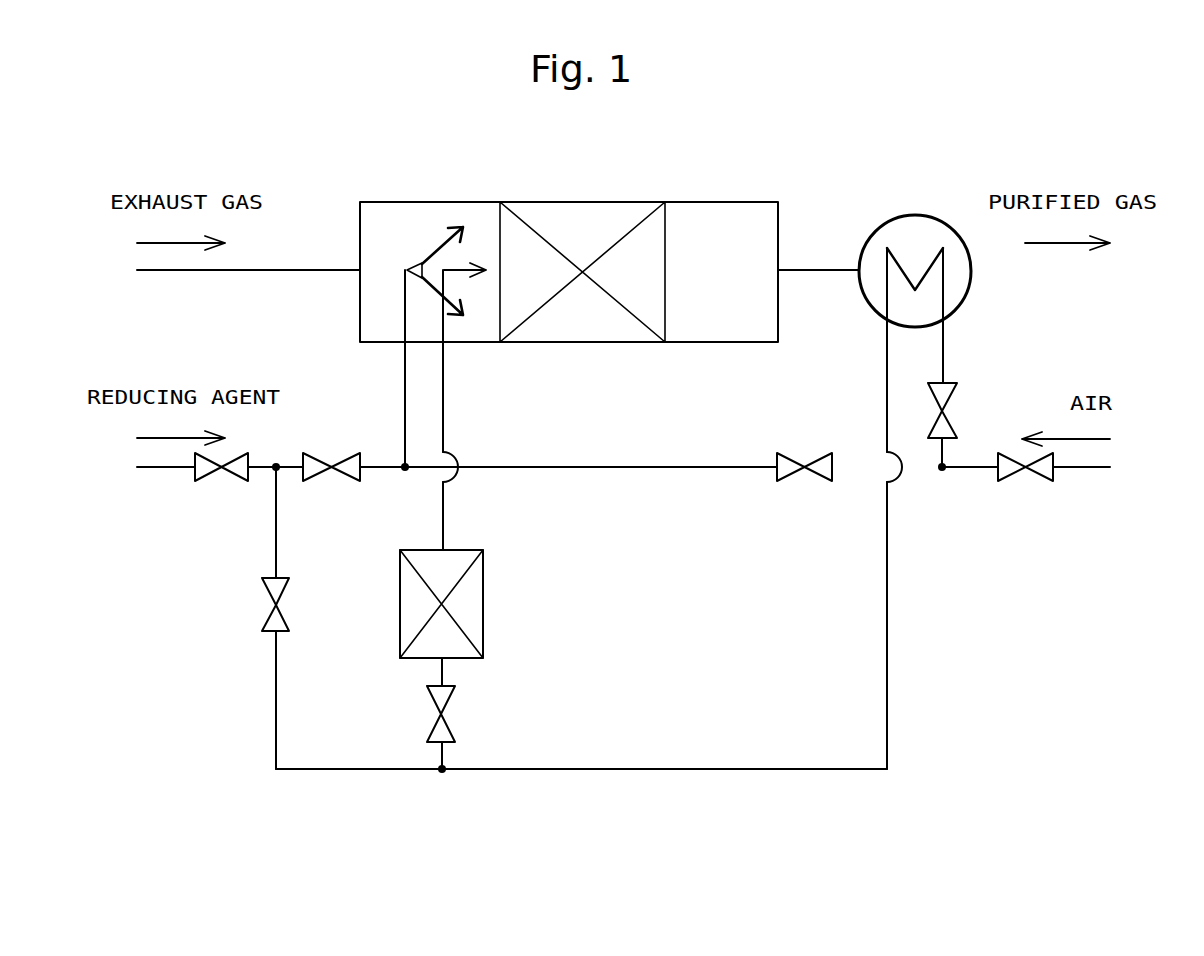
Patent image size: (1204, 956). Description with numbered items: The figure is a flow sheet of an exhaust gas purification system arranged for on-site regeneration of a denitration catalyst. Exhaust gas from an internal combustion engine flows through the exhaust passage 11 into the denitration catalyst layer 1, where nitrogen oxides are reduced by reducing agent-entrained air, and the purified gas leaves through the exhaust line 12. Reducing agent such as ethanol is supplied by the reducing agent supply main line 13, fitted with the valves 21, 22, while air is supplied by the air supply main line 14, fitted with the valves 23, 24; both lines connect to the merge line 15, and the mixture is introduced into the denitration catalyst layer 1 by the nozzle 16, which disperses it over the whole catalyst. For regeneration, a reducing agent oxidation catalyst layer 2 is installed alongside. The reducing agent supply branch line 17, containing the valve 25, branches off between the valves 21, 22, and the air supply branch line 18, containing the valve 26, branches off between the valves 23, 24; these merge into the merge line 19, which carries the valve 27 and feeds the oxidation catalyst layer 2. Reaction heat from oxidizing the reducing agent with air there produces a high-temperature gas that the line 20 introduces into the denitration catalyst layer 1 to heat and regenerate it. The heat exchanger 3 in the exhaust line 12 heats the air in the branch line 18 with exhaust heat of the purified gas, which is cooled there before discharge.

The denitration catalyst layer 1 is at (584, 202).
The reducing agent oxidation catalyst layer 2 is at (483, 602).
The heat exchanger 3 is at (915, 215).
The exhaust passage 11 is at (170, 272).
The exhaust line 12 is at (821, 270).
The reducing agent supply main line 13 is at (158, 470).
The air supply main line 14 is at (967, 472).
The merge line 15 is at (405, 392).
The nozzle 16 is at (407, 263).
The reducing agent supply branch line 17 is at (272, 564).
The air supply branch line 18 is at (943, 345).
The merge line 19 is at (440, 757).
The line 20 is at (443, 520).
The valve 21 is at (232, 481).
The valve 22 is at (345, 481).
The valve 23 is at (1040, 481).
The valve 24 is at (818, 481).
The valve 25 is at (265, 615).
The valve 26 is at (957, 422).
The valve 27 is at (455, 702).